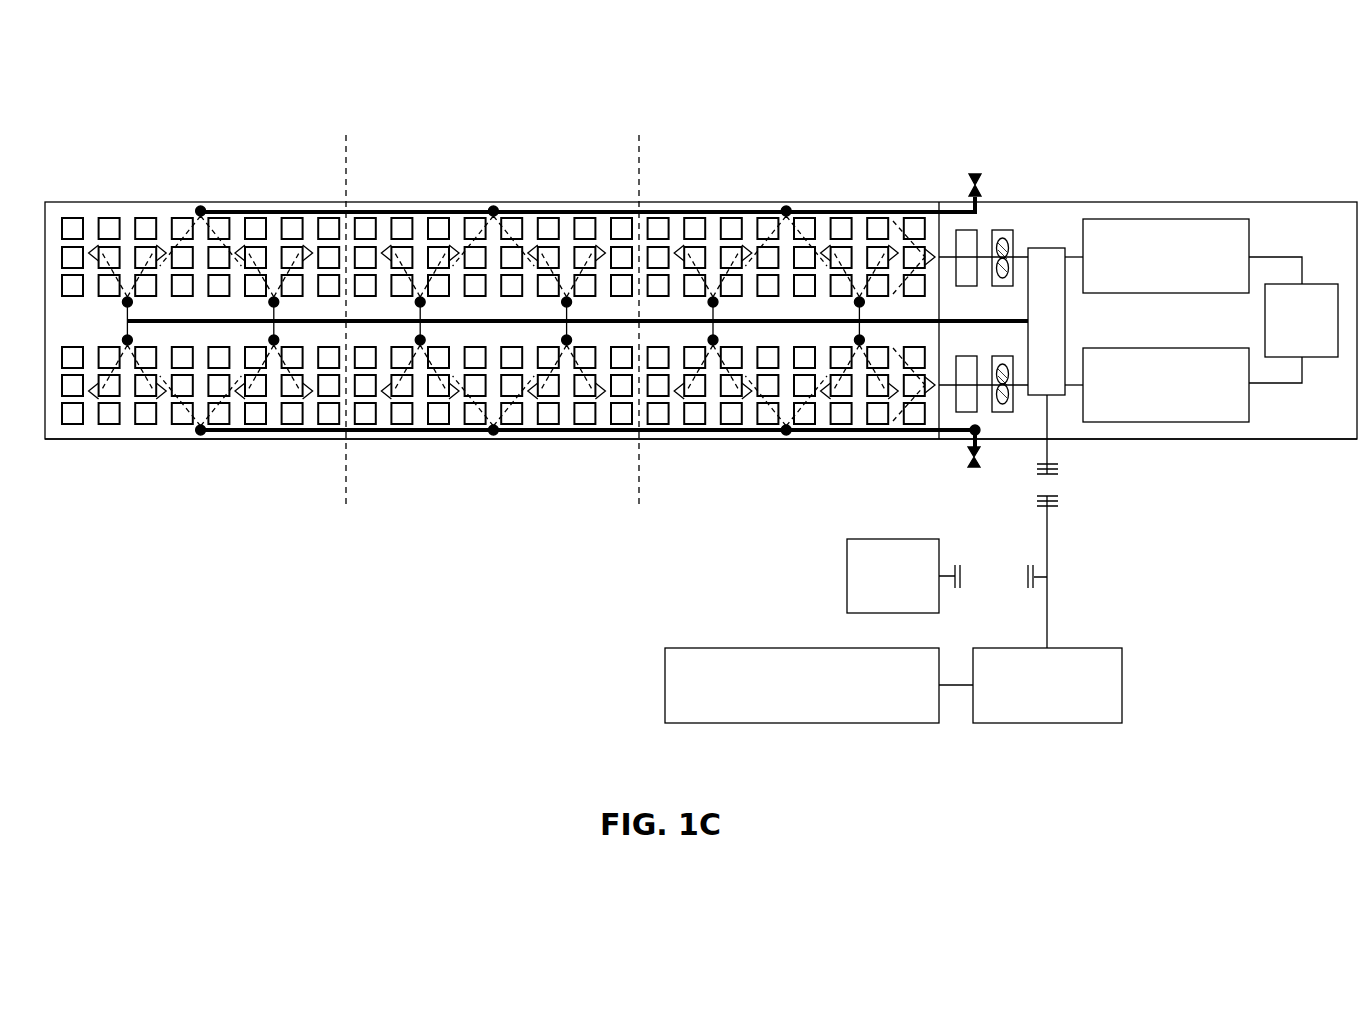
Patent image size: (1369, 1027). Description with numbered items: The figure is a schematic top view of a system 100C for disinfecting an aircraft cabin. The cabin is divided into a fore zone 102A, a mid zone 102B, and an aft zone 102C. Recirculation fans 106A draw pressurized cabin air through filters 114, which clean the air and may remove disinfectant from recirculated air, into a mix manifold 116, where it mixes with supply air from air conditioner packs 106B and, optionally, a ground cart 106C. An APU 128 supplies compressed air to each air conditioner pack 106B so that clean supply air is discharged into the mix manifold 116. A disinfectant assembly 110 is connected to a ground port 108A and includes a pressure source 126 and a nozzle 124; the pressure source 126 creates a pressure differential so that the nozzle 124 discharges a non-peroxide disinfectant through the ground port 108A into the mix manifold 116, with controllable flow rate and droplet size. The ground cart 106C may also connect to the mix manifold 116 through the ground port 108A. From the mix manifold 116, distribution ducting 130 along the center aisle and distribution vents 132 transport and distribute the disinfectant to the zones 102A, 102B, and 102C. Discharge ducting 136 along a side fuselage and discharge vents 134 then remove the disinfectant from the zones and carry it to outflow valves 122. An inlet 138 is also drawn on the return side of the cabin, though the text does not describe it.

The system 100C is at (890, 74).
The fore zone 102A is at (204, 320).
The mid zone 102B is at (497, 320).
The aft zone 102C is at (791, 281).
The recirculation fan 106A is at (997, 230).
The air conditioner pack 106B is at (1157, 320).
The ground cart 106C is at (903, 576).
The ground port 108A is at (1050, 478).
The disinfectant assembly 110 is at (1112, 607).
The filter 114 is at (962, 230).
The mix manifold 116 is at (1043, 247).
The outflow valve 122 is at (978, 468).
The nozzle 124 is at (1047, 685).
The pressure source 126 is at (819, 685).
The APU 128 is at (1293, 320).
The distribution ducting 130 is at (533, 323).
The distribution vent 132 is at (709, 378).
The discharge vent 134 is at (205, 456).
The discharge ducting 136 is at (392, 432).
The return air inlet 138 is at (938, 258).